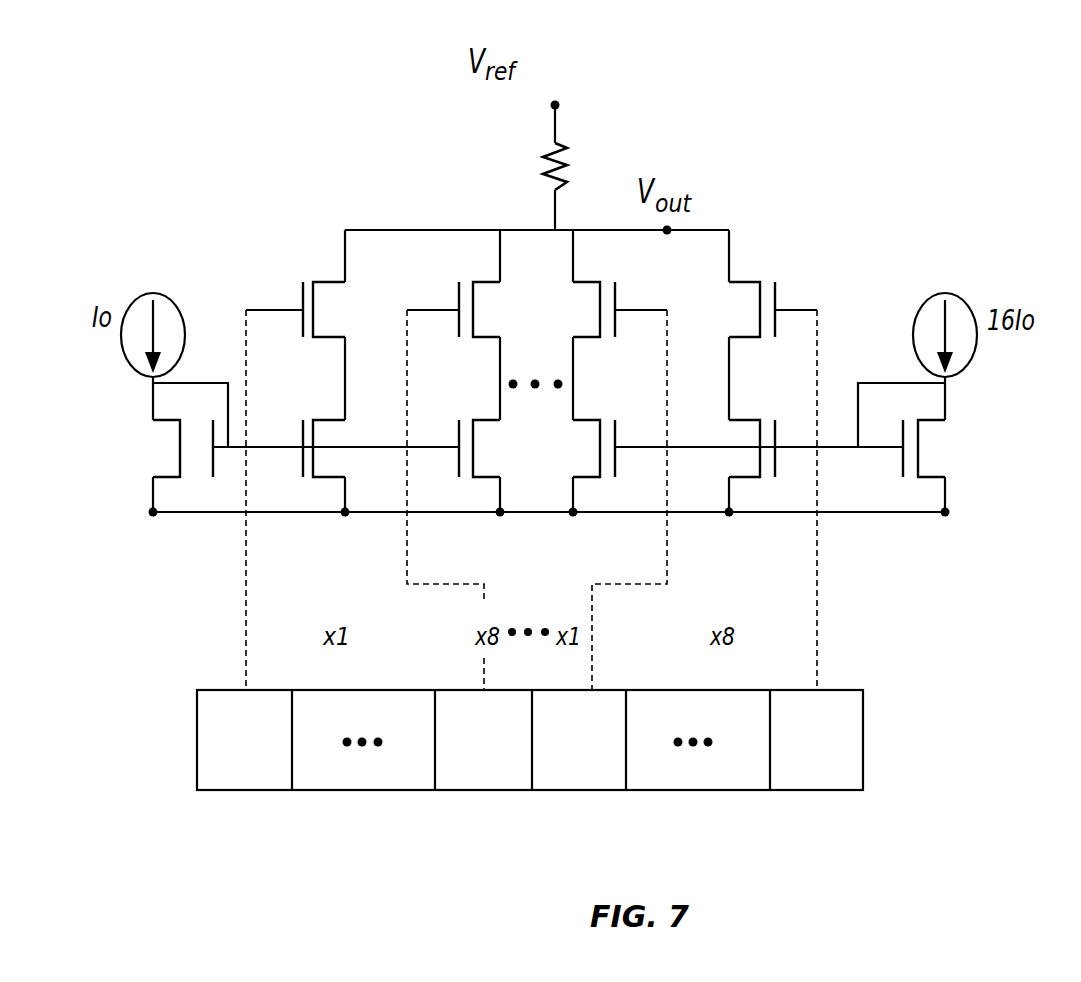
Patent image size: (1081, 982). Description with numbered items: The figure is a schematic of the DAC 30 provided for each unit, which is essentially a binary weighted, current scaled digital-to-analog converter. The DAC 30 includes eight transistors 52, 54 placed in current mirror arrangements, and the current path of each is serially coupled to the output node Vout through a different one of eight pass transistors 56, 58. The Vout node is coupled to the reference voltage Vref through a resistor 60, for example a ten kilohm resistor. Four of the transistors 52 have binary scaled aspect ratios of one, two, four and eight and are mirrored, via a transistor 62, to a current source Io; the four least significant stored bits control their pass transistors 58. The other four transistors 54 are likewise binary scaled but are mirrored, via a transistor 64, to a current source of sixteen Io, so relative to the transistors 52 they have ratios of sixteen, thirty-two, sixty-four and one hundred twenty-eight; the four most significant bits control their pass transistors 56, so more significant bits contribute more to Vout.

The DAC 30 is at (570, 792).
The transistors 52 is at (333, 478).
The transistors 54 is at (577, 420).
The pass transistors 56 is at (598, 282).
The pass transistors 58 is at (345, 282).
The resistor 60 is at (567, 145).
The transistor 62 is at (150, 423).
The transistor 64 is at (945, 423).